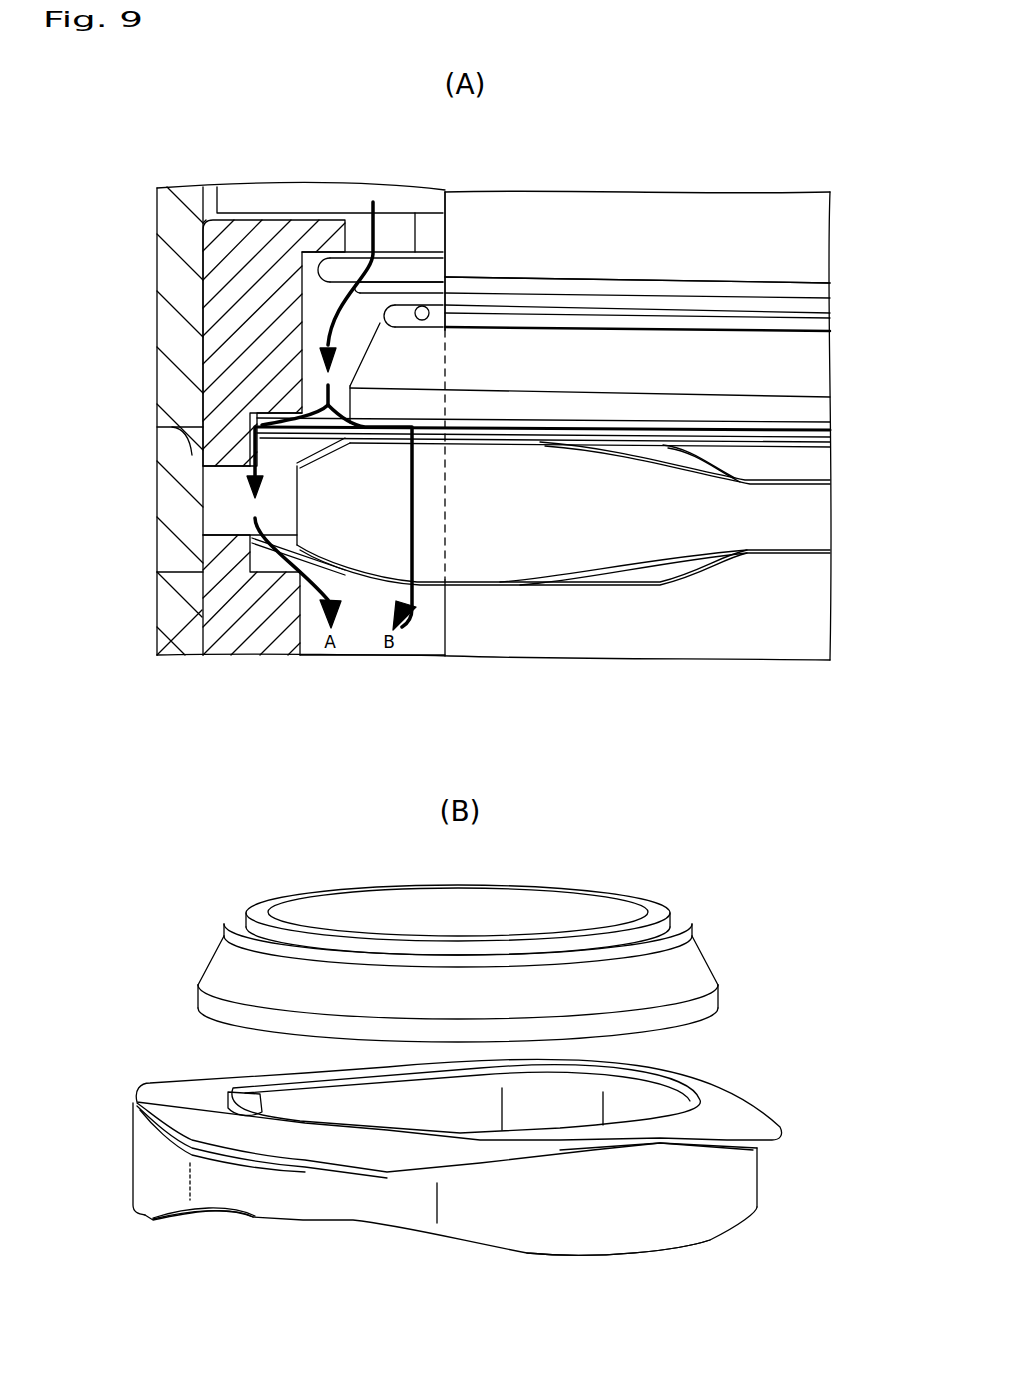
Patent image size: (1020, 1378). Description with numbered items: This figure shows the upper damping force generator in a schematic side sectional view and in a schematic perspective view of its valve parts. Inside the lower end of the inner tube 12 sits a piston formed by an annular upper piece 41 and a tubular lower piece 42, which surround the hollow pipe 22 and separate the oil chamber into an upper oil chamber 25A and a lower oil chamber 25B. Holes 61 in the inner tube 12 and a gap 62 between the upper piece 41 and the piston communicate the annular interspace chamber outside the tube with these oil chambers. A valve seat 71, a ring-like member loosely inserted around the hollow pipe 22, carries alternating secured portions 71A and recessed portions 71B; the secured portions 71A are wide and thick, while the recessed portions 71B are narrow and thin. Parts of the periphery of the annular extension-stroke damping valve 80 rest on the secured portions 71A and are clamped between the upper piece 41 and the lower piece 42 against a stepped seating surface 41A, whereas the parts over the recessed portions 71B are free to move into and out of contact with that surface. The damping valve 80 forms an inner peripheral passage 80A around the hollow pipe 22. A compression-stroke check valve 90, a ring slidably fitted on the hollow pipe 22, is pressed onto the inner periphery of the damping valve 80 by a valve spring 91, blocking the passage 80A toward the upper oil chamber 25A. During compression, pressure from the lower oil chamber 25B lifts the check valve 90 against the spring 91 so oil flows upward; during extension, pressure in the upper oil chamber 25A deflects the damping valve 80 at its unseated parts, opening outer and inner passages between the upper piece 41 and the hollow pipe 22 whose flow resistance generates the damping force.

The inner tube 12 is at (160, 284).
The hollow pipe 22 is at (443, 197).
The upper oil chamber 25A is at (306, 197).
The lower oil chamber 25B is at (353, 618).
The upper piece 41 is at (240, 257).
The stepped seating surface 41A is at (252, 420).
The lower piece 42 is at (228, 608).
The holes 61 is at (203, 441).
The gap 62 is at (225, 535).
The valve seat 71 is at (760, 529).
The secured portion 71A is at (618, 1213).
The recessed portion 71B is at (320, 1196).
The extension-stroke damping valve 80 is at (534, 430).
The inner peripheral passage 80A is at (228, 1088).
The compression-stroke check valve 90 is at (575, 328).
The valve spring 91 is at (707, 295).